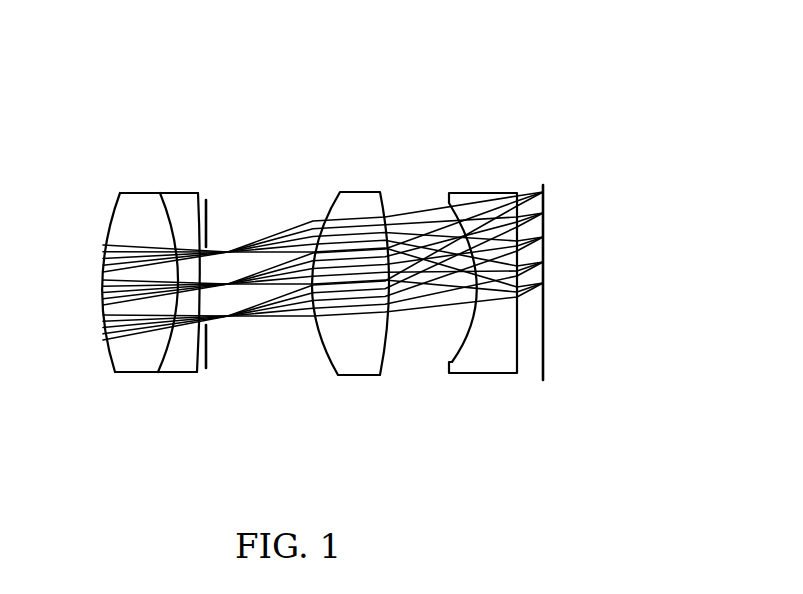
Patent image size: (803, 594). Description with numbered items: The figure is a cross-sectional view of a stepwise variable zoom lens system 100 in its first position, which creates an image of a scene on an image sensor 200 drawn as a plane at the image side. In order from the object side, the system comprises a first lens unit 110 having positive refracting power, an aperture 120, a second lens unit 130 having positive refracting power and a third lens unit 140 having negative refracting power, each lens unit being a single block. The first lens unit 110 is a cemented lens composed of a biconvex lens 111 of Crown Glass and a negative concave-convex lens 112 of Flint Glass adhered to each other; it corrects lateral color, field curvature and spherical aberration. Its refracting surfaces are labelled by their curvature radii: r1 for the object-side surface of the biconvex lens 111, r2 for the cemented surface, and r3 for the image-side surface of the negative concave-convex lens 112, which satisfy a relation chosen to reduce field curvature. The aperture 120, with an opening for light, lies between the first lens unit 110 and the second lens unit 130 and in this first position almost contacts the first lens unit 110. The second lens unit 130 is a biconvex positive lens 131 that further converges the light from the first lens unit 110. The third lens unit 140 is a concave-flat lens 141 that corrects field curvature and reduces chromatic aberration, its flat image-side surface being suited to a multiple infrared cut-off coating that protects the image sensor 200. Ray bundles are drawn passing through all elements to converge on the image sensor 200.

The stepwise variable zoom lens system 100 is at (216, 89).
The first lens unit 110 is at (200, 183).
The biconvex lens 111 is at (104, 334).
The negative concave-convex lens 112 is at (216, 338).
The aperture 120 is at (208, 225).
The second lens unit 130 is at (395, 183).
The biconvex positive lens 131 is at (352, 377).
The third lens unit 140 is at (520, 183).
The concave-flat lens 141 is at (480, 374).
The image sensor 200 is at (550, 188).
The curvature radius of the object-side refracting surface of the biconvex lens r1 is at (104, 300).
The curvature radius of the cemented surface r2 is at (158, 374).
The curvature radius of the image-side refracting surface of the negative concave-co r3 is at (207, 341).